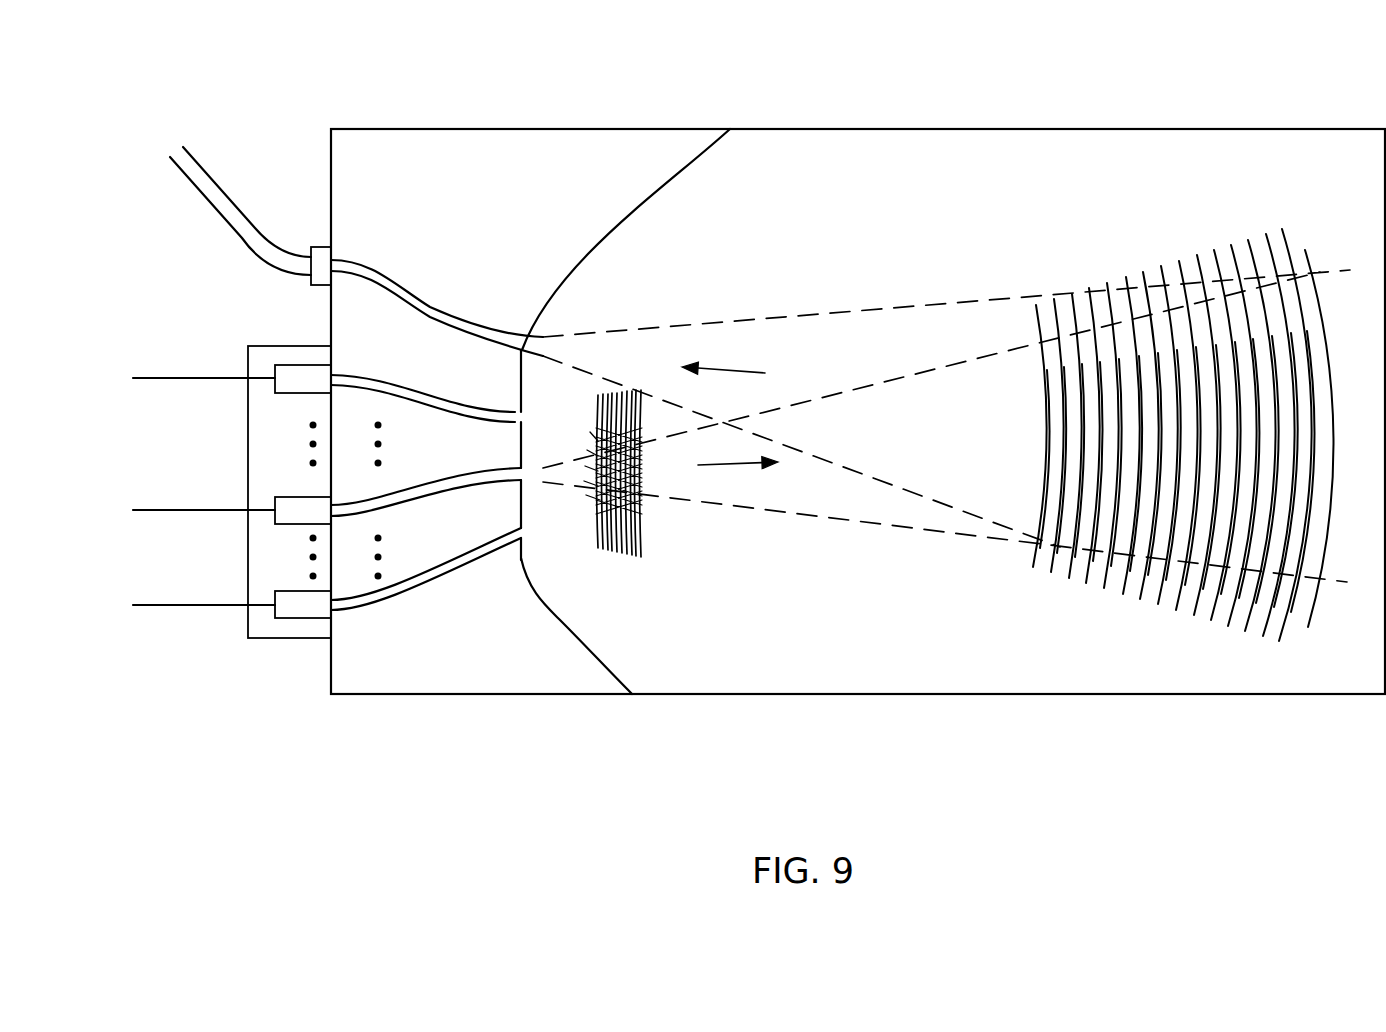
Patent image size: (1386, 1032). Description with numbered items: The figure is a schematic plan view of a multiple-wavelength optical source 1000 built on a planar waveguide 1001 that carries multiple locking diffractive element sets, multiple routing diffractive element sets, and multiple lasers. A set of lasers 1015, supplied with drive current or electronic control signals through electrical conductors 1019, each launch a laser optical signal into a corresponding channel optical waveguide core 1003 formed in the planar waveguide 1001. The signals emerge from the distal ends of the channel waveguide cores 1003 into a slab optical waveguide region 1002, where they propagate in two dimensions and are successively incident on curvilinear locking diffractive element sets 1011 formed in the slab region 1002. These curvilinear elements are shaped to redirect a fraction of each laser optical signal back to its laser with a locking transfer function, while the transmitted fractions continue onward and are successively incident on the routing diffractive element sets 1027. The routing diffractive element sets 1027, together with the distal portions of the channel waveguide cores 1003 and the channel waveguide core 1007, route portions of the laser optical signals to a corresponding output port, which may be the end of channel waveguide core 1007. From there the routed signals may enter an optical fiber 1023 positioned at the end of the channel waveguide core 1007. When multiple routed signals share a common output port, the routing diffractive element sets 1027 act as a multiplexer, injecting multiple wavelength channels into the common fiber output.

The multiple-wavelength optical source 1000 is at (262, 790).
The planar waveguide 1001 is at (875, 664).
The slab optical waveguide region 1002 is at (951, 220).
The channel optical waveguide cores 1003 is at (453, 407).
The channel waveguide core 1007 is at (401, 283).
The locking diffractive element sets 1011 is at (659, 597).
The lasers 1015 is at (302, 607).
The electrical conductors 1019 is at (197, 510).
The optical fiber 1023 is at (217, 203).
The routing diffractive element sets 1027 is at (1130, 207).